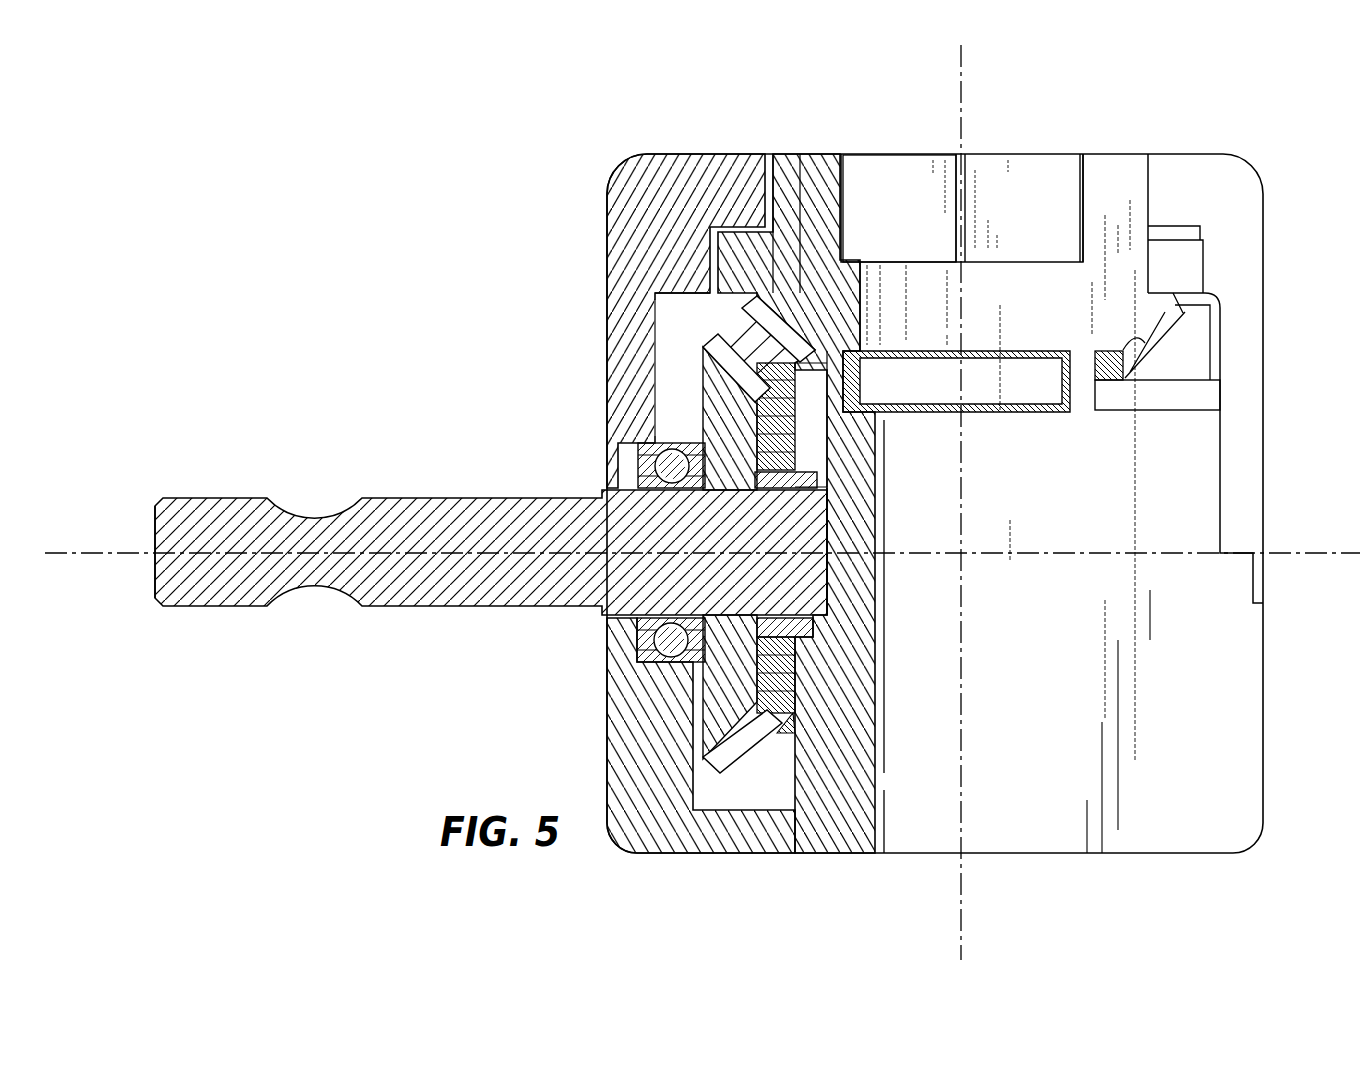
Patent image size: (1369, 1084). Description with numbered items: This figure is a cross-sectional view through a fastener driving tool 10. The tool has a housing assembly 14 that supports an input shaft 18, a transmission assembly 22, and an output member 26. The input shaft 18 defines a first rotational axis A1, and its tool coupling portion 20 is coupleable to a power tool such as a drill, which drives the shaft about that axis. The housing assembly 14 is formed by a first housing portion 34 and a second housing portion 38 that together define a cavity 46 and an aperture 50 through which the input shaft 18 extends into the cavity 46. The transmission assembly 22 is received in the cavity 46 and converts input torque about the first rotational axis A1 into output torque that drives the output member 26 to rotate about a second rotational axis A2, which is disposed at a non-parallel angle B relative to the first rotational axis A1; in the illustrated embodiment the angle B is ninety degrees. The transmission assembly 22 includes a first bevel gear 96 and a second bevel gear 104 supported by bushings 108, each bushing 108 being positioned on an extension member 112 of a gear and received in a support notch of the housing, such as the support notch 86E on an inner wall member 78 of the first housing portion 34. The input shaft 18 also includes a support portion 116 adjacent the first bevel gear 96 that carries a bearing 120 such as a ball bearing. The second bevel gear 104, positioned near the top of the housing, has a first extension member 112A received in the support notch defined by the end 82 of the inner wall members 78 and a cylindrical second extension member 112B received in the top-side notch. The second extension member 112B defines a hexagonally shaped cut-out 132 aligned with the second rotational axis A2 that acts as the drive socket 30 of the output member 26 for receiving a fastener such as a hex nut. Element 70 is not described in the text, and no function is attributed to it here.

The fastener driving tool 10 is at (412, 212).
The housing assembly 14 is at (1302, 174).
The input shaft 18 is at (442, 497).
The tool coupling portion 20 is at (258, 645).
The transmission assembly 22 is at (771, 772).
The output member 26 is at (1130, 200).
The drive socket 30 is at (1015, 182).
The first housing portion 34 is at (606, 768).
The second housing portion 38 is at (606, 244).
The cavity 46 is at (660, 379).
The aperture 50 is at (652, 327).
The stator ring 70 is at (903, 156).
The inner wall members 78 is at (1217, 678).
The end of the inner wall members 82 is at (1180, 377).
The support notch 86E is at (827, 600).
The first bevel gear 96 is at (737, 742).
The second bevel gear 104 is at (775, 336).
The bushings 108 is at (788, 155).
The extension member 112 is at (828, 487).
The first extension member 112A is at (1100, 410).
The second extension member 112B is at (1123, 278).
The support portion 116 is at (622, 624).
The bearing 120 is at (642, 663).
The hexagonally shaped cut-out 132 is at (1082, 181).
The first rotational axis A1 is at (124, 552).
The second rotational axis A2 is at (965, 92).
The angle B is at (952, 489).